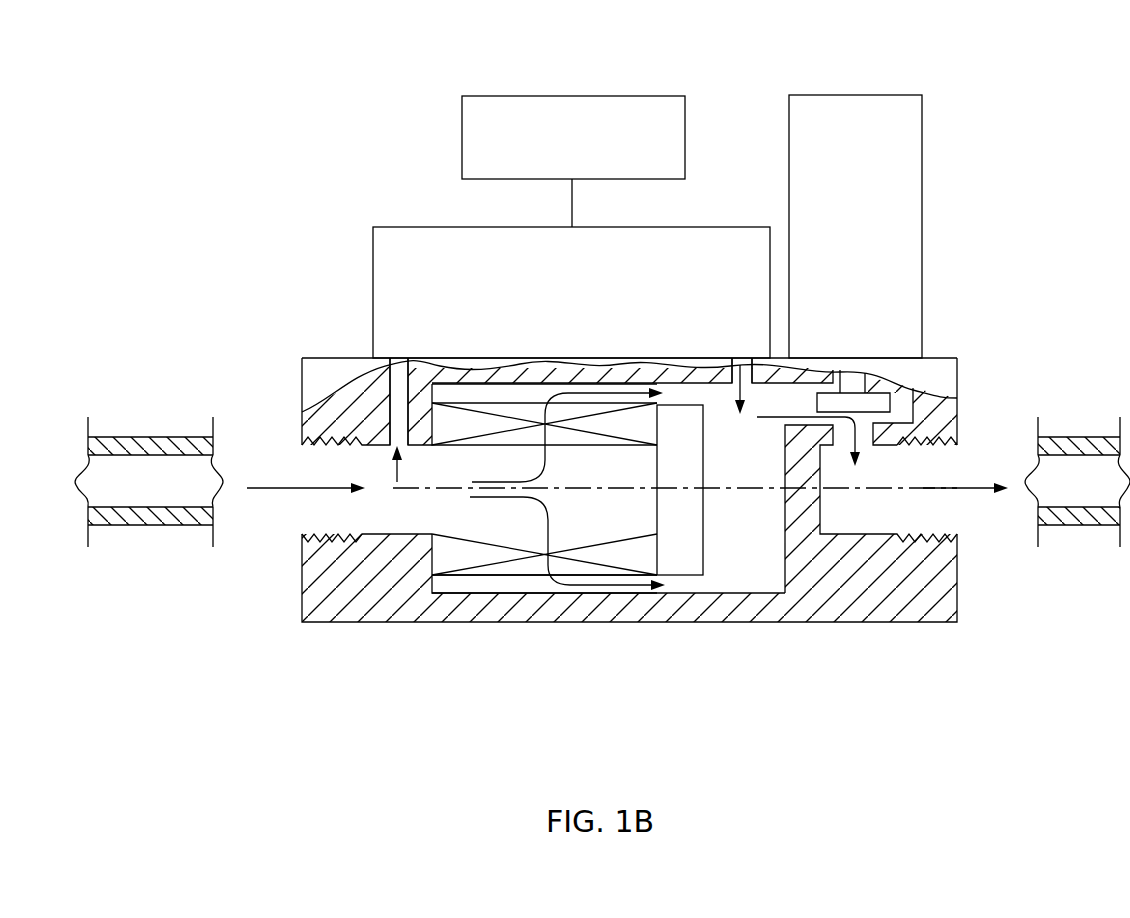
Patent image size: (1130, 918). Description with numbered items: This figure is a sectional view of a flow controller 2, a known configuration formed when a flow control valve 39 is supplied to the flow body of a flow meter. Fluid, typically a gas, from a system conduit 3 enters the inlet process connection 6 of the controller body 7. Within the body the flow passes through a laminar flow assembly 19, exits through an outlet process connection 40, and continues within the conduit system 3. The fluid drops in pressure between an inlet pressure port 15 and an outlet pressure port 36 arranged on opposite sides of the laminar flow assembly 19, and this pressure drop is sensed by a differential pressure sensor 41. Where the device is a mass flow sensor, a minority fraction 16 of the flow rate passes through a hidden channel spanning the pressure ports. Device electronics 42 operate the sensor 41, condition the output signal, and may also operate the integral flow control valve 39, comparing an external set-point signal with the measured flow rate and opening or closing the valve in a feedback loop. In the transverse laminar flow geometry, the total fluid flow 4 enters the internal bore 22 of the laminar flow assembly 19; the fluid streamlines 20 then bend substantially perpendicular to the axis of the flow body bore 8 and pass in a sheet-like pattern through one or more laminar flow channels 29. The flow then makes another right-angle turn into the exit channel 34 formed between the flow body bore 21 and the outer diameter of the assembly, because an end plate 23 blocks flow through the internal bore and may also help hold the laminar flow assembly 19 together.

The flow controller 2 is at (766, 70).
The system conduit 3 is at (129, 525).
The total fluid flow 4 is at (298, 486).
The inlet process connection 6 is at (323, 533).
The controller body 7 is at (600, 622).
The flow body bore 8 is at (437, 490).
The inlet pressure port 15 is at (398, 437).
The minority fraction 16 is at (395, 472).
The laminar flow assembly 19 is at (478, 586).
The fluid streamlines 20 is at (547, 550).
The flow body bore 21 is at (548, 598).
The internal bore 22 is at (457, 540).
The end plate 23 is at (679, 577).
The laminar flow channels 29 is at (538, 414).
The exit channel 34 is at (682, 383).
The outlet pressure port 36 is at (745, 358).
The flow control valve 39 is at (948, 212).
The outlet process connection 40 is at (929, 538).
The differential pressure sensor 41 is at (420, 227).
The device electronics 42 is at (580, 96).